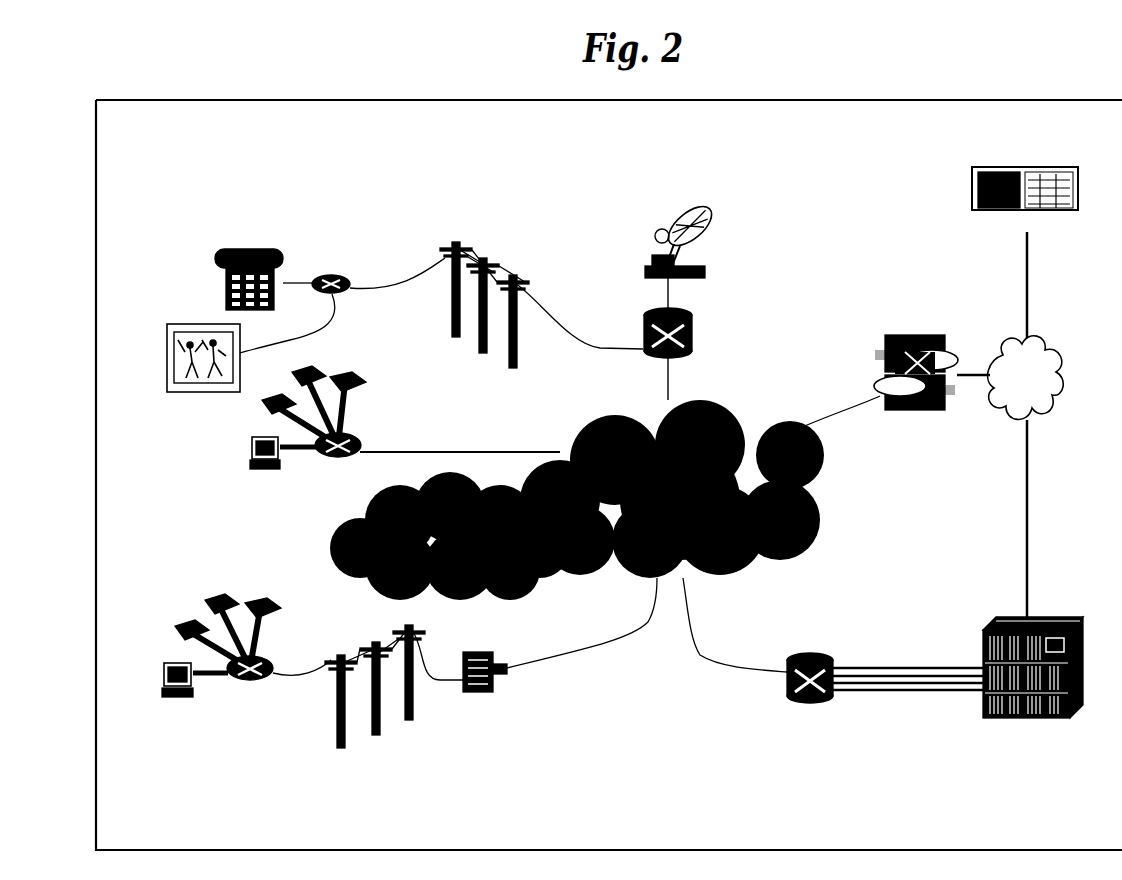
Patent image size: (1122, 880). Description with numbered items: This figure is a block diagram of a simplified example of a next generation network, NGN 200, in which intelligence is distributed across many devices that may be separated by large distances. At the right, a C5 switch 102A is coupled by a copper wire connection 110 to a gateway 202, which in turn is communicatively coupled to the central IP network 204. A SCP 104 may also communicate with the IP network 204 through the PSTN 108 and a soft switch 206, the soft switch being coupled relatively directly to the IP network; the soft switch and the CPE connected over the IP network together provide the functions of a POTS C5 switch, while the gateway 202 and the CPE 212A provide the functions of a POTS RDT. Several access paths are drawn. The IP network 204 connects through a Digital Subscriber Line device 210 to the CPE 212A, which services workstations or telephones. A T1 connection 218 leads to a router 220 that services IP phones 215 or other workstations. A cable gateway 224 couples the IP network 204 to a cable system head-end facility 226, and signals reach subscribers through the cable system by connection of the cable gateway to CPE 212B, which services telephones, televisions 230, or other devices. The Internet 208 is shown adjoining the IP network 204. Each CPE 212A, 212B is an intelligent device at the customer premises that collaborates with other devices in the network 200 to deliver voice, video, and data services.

The NGN 200 is at (600, 165).
The CPE 212B is at (350, 280).
The CPE device 212A is at (243, 683).
The televisions 230 is at (191, 324).
The cable system head-end facility 226 is at (697, 213).
The cable gateway 224 is at (692, 316).
The SCP 104 is at (993, 167).
The soft switch 206 is at (951, 295).
The PSTN 108 is at (1045, 360).
The IP network 204 is at (820, 498).
The Internet 208 is at (335, 545).
The IP telephones 215 is at (363, 380).
The router 220 is at (340, 462).
The T1 connection 218 is at (489, 452).
The DSL device 210 is at (510, 667).
The gateway 202 is at (815, 653).
The copper wire connection 110 is at (903, 690).
The C5 switch 102A is at (993, 714).